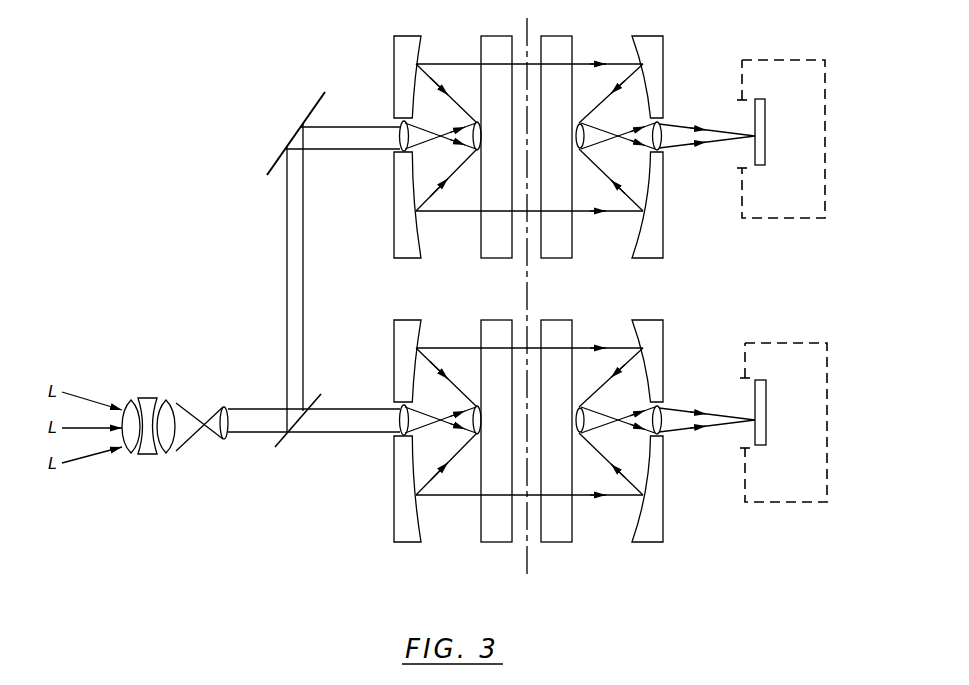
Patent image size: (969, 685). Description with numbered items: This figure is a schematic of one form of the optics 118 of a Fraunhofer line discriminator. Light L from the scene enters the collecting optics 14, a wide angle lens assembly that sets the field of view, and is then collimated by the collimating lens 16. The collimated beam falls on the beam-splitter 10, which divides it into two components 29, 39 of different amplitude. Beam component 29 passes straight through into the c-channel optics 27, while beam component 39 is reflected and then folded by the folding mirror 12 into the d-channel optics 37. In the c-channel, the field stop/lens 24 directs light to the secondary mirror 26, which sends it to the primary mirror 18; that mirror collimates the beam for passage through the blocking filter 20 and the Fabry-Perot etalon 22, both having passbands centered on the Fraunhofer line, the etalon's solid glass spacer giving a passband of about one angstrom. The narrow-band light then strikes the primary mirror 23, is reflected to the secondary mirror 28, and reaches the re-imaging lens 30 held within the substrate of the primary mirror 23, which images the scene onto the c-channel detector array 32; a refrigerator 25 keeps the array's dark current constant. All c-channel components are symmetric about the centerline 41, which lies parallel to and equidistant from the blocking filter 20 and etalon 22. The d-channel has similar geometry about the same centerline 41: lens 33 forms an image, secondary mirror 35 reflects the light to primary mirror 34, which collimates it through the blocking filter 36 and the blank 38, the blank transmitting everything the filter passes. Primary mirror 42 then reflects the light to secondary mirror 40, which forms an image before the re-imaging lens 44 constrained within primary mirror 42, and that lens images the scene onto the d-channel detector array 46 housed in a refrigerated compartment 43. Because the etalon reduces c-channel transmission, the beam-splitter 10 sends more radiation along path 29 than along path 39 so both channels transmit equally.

The beam-splitter 10 is at (315, 393).
The folding mirror 12 is at (305, 108).
The collecting optics 14 is at (173, 467).
The collimating lens 16 is at (219, 446).
The primary mirror 18 is at (410, 319).
The blocking filter 20 is at (504, 318).
The Fabry-Perot etalon 22 is at (553, 318).
The primary mirror 23 is at (660, 318).
The field stop/lens 24 is at (396, 434).
The refrigerator 25 is at (828, 384).
The secondary mirror 26 is at (477, 435).
The c-channel optics 27 is at (397, 563).
The secondary mirror 28 is at (582, 434).
The beam component 29 is at (333, 434).
The re-imaging lens 30 is at (666, 433).
The c-channel detector array 32 is at (763, 379).
The lens 33 is at (397, 118).
The primary mirror 34 is at (407, 33).
The secondary mirror 35 is at (476, 119).
The blocking filter 36 is at (507, 33).
The d-channel optics 37 is at (388, 35).
The blank 38 is at (580, 8).
The beam component 39 is at (286, 293).
The secondary mirror 40 is at (580, 120).
The centerline 41 is at (528, 563).
The primary mirror 42 is at (665, 50).
The refrigerated compartment 43 is at (827, 118).
The re-imaging lens 44 is at (666, 149).
The d-channel detector array 46 is at (762, 97).
The optics 118 is at (383, 299).